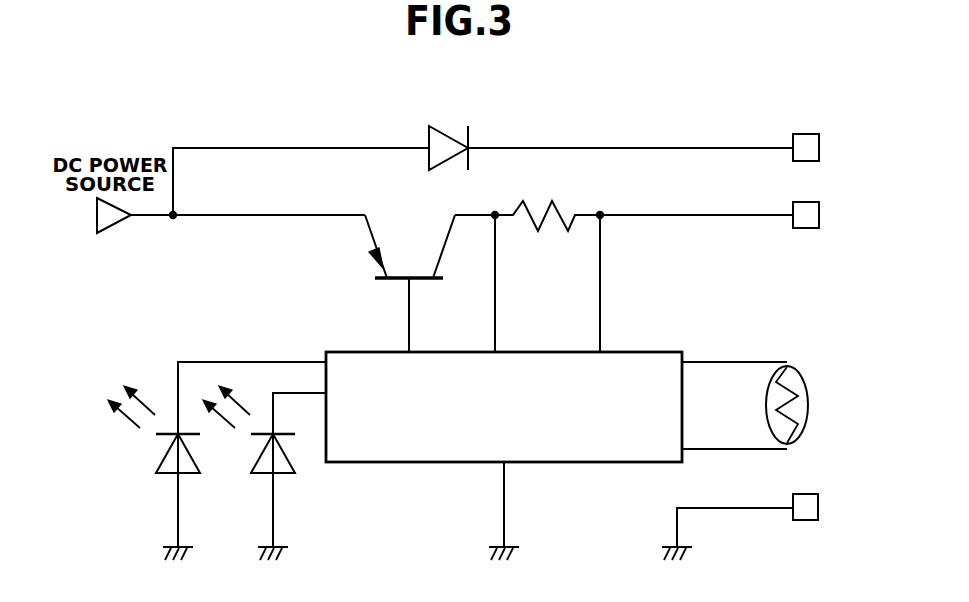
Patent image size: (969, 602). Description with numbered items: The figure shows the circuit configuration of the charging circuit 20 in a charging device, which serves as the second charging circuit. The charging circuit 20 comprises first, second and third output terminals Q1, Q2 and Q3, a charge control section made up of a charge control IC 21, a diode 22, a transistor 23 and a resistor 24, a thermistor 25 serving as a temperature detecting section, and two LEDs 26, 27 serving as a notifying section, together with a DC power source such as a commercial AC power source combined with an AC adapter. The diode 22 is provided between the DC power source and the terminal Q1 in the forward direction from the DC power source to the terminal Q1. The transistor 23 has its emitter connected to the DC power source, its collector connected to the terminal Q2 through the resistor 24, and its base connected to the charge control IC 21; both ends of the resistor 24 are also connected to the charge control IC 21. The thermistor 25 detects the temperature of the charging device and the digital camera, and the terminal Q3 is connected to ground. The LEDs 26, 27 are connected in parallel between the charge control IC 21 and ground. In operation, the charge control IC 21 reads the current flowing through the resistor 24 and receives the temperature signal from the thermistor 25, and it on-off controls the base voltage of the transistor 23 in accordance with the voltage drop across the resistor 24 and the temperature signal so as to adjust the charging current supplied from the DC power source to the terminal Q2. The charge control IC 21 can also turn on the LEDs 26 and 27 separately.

The charging circuit in a charging device 20 is at (630, 117).
The charge control IC 21 is at (632, 352).
The diode 22 is at (440, 126).
The transistor 23 is at (397, 282).
The resistor 24 is at (563, 208).
The thermistor 25 is at (796, 370).
The LED 26 is at (163, 478).
The LED 27 is at (256, 478).
The first output terminal Q1 is at (819, 140).
The second output terminal Q2 is at (819, 208).
The third output terminal Q3 is at (812, 494).